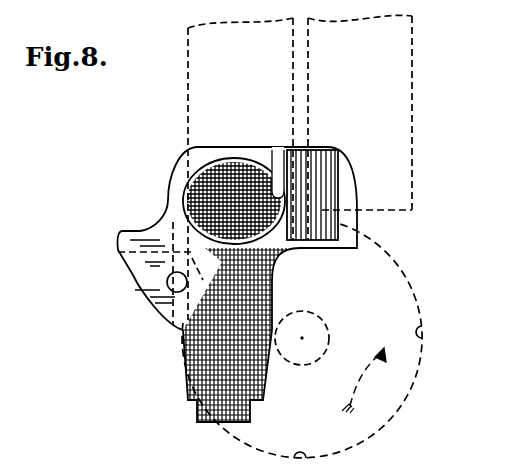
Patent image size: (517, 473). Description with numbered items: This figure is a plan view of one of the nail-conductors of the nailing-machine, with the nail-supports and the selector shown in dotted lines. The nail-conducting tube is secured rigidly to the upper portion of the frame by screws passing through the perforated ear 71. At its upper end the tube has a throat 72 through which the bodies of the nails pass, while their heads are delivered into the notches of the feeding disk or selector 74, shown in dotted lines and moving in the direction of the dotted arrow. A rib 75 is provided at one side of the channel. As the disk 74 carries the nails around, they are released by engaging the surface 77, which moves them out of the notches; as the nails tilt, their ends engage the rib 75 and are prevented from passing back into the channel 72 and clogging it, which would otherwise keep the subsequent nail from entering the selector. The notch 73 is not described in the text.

The perforated ear 71 is at (172, 285).
The throat 72 is at (318, 160).
The notch in disk 73 is at (426, 333).
The feeding disk or selector 74 is at (302, 341).
The rib 75 is at (276, 194).
The surface 77 is at (190, 246).